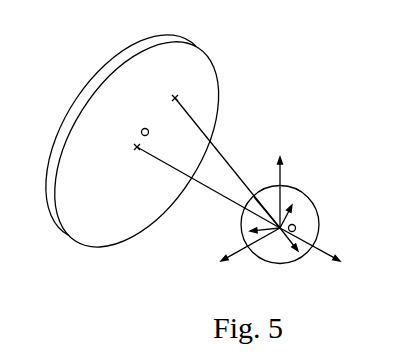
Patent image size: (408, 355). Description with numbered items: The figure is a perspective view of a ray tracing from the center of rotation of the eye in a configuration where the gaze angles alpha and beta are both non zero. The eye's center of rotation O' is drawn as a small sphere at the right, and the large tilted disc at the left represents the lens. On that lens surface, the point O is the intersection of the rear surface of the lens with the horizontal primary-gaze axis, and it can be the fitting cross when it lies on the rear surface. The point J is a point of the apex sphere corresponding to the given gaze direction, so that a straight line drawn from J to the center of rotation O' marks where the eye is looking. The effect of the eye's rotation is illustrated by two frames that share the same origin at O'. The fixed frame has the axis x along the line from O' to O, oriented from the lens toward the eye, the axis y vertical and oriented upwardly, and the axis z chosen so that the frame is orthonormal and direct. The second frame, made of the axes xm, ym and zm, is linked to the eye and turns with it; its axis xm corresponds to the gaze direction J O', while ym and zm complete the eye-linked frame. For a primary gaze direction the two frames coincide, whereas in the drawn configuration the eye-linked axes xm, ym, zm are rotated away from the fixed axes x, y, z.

The point O is at (145, 132).
The point J is at (220, 161).
The center of rotation of the eye O' is at (294, 225).
The x axis x is at (310, 253).
The y axis y is at (285, 191).
The z axis z is at (250, 254).
The x_m axis xm is at (276, 229).
The y_m axis ym is at (293, 216).
The z_m axis zm is at (262, 224).